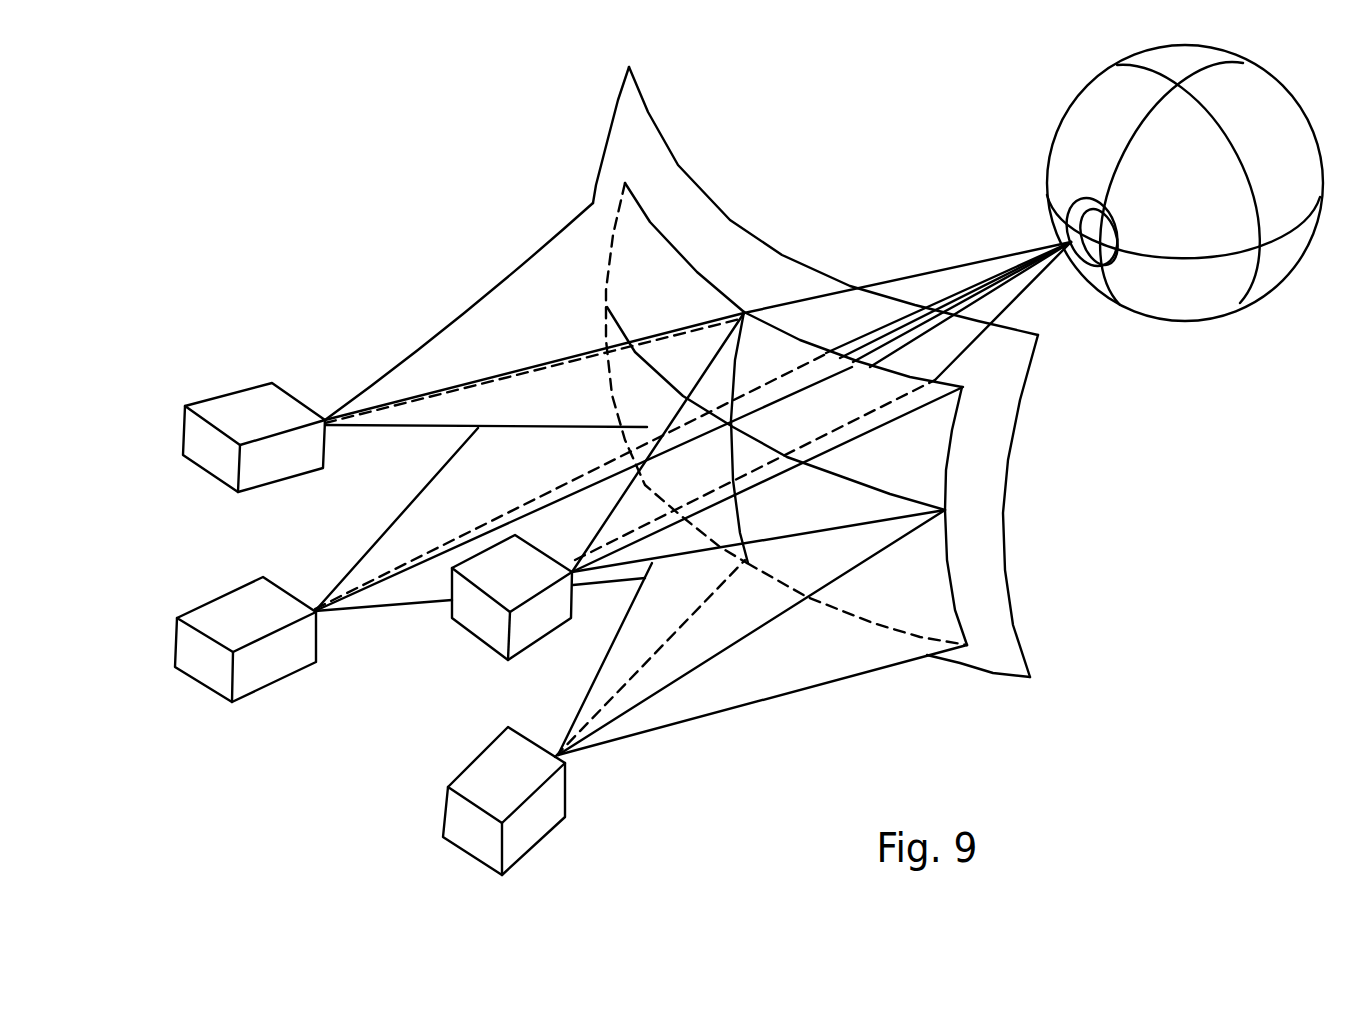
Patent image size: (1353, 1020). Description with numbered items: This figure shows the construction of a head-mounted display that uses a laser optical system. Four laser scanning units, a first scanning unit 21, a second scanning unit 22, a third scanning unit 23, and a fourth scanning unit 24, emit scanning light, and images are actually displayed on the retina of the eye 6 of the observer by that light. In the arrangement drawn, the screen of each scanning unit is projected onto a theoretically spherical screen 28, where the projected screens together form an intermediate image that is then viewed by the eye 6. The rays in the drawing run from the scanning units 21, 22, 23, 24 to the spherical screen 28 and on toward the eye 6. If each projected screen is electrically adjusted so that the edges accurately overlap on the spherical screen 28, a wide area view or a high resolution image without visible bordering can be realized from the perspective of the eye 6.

The eye 6 is at (1200, 302).
The first scanning unit 21 is at (218, 463).
The second scanning unit 22 is at (482, 615).
The third scanning unit 23 is at (212, 670).
The fourth scanning unit 24 is at (463, 823).
The spherical screen 28 is at (745, 229).